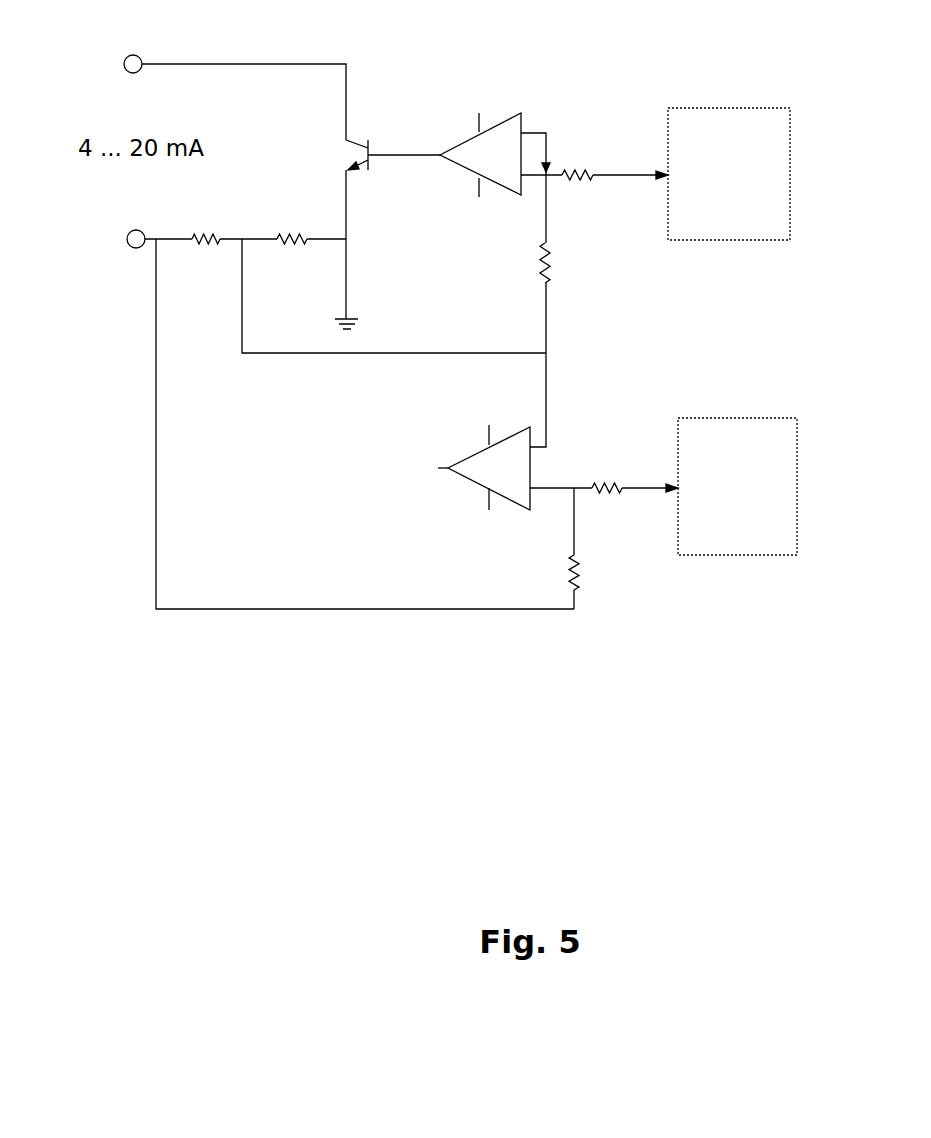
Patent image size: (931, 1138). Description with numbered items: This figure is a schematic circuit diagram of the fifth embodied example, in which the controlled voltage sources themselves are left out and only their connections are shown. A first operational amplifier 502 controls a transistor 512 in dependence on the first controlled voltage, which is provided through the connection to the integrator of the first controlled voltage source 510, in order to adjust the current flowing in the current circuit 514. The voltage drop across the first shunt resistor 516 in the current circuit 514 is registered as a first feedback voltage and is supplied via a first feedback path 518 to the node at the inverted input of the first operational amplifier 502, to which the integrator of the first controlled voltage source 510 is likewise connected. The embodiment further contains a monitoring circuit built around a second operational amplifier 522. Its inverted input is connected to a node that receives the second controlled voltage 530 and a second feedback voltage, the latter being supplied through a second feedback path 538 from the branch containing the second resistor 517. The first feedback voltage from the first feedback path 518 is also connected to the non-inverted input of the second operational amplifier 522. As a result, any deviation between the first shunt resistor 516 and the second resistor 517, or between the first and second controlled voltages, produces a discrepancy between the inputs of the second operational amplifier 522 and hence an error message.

The current circuit 514 is at (185, 64).
The first shunt resistor 516 is at (292, 187).
The transistor 512 is at (372, 148).
The first operational amplifier 502 is at (497, 135).
The connection to the integrator of the first controlled voltage source 510 is at (729, 174).
The second resistor 517 is at (212, 243).
The first feedback path 518 is at (467, 353).
The second operational amplifier 522 is at (480, 467).
The second controlled voltage 530 is at (737, 486).
The second feedback path 538 is at (322, 609).